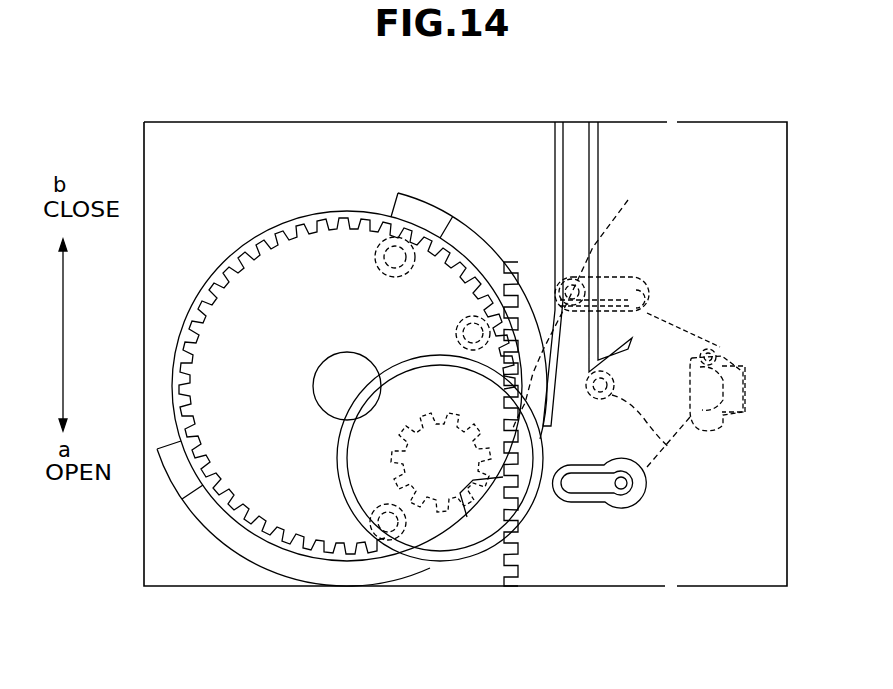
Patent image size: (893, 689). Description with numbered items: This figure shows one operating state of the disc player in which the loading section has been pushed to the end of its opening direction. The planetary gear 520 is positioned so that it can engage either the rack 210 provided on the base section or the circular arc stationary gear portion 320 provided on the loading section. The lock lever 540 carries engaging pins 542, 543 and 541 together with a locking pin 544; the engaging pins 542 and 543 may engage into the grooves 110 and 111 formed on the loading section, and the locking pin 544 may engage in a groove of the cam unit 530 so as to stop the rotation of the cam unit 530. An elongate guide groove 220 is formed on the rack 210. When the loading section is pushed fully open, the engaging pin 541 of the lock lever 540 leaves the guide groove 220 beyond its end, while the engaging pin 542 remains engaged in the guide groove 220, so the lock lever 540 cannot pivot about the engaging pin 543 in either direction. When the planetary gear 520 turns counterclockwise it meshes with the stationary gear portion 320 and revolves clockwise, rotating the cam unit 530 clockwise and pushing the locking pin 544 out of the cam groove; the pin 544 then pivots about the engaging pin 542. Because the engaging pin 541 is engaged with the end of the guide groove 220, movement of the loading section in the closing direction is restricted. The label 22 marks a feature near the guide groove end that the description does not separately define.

The circular arc stationary gear portion 320 is at (267, 262).
The cam unit 530 is at (448, 198).
The locking pin 544 is at (620, 487).
The planetary gear 520 is at (432, 455).
The rack 210 is at (487, 590).
The elongate guide groove 220 is at (588, 203).
The engaging pin 542 is at (583, 302).
The groove 110 is at (600, 287).
The lock lever 540 is at (662, 331).
The pin 22 is at (612, 363).
The engaging pin 541 is at (681, 447).
The engaging pin 543 is at (619, 506).
The groove 111 is at (634, 484).